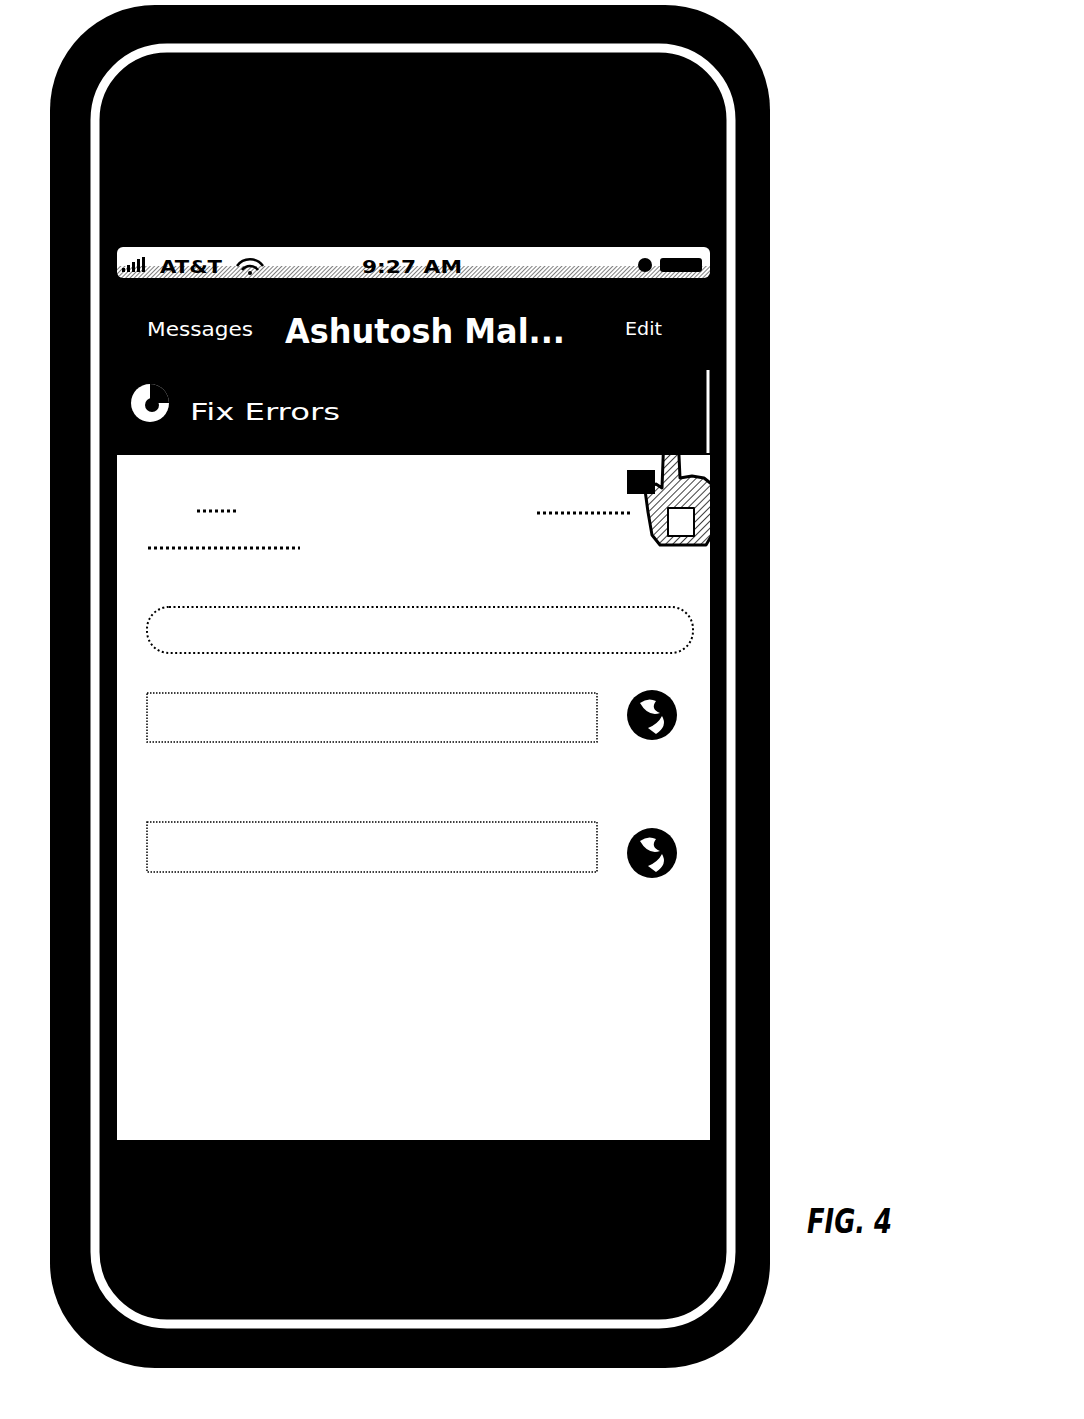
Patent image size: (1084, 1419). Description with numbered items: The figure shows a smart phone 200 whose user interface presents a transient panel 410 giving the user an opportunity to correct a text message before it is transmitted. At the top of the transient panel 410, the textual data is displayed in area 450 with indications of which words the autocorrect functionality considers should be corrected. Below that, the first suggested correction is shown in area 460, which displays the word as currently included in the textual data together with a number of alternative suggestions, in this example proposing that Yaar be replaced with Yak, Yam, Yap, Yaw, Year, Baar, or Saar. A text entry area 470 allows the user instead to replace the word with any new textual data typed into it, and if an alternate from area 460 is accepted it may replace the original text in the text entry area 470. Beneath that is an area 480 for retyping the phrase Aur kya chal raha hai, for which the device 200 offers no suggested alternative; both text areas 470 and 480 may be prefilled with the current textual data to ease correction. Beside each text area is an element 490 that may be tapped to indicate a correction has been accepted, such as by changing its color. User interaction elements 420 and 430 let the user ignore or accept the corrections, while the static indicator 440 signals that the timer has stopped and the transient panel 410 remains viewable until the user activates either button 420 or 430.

The smart phone 200 is at (458, 684).
The transient panel 410 is at (513, 804).
The user interaction element 420 is at (429, 384).
The user interaction element 430 is at (596, 386).
The indicator 440 is at (191, 379).
The area 450 is at (535, 538).
The area 460 is at (550, 647).
The text entry area 470 is at (372, 740).
The area 480 is at (372, 851).
The element 490 is at (690, 706).